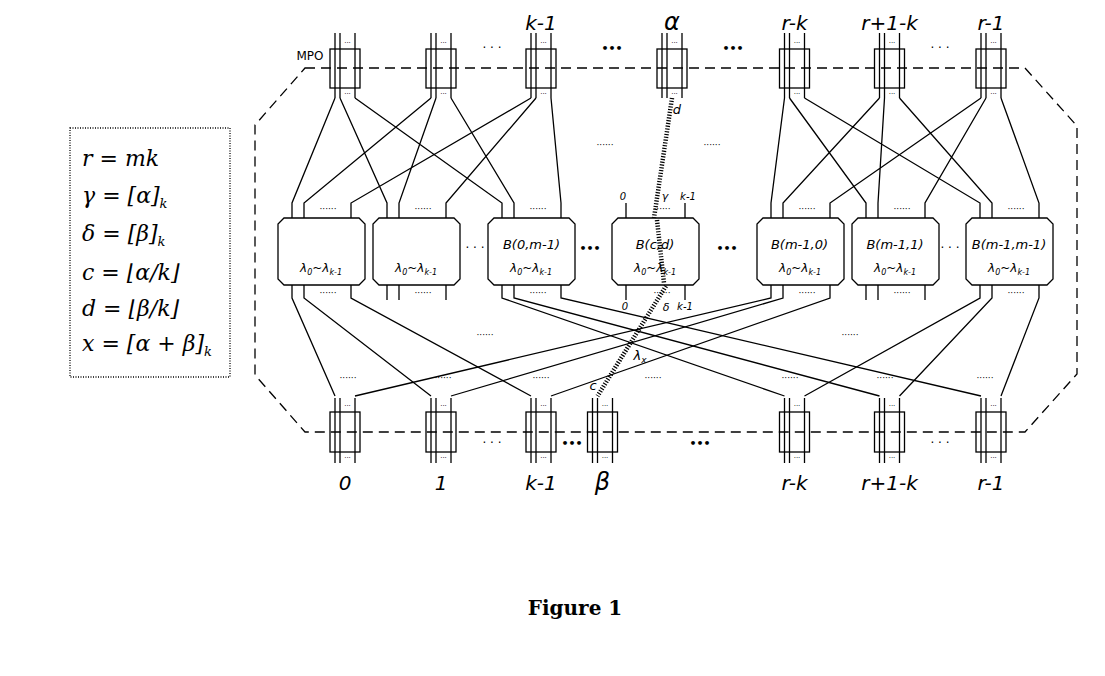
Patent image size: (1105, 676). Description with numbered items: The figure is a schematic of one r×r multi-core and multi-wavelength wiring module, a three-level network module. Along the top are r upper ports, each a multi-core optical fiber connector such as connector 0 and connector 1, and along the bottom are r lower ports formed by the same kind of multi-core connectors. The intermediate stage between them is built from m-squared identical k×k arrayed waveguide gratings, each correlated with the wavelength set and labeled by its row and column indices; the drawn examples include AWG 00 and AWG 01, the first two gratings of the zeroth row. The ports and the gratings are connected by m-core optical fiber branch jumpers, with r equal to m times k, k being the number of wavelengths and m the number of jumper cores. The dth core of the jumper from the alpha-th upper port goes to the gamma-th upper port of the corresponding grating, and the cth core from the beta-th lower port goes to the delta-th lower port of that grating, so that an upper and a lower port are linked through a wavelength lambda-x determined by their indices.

The MPO multi-core optical fiber connector 0 is at (345, 54).
The MPO multi-core optical fiber connector 1 is at (441, 54).
The k×k AWG B(0,0) 00 is at (321, 251).
The k×k AWG B(0,1) 01 is at (416, 251).